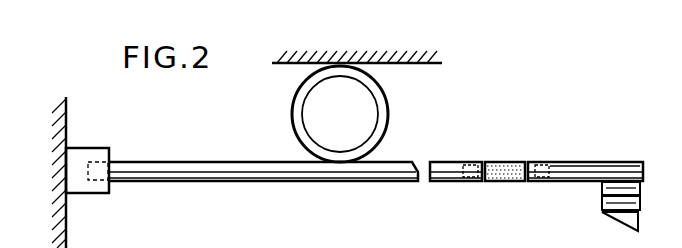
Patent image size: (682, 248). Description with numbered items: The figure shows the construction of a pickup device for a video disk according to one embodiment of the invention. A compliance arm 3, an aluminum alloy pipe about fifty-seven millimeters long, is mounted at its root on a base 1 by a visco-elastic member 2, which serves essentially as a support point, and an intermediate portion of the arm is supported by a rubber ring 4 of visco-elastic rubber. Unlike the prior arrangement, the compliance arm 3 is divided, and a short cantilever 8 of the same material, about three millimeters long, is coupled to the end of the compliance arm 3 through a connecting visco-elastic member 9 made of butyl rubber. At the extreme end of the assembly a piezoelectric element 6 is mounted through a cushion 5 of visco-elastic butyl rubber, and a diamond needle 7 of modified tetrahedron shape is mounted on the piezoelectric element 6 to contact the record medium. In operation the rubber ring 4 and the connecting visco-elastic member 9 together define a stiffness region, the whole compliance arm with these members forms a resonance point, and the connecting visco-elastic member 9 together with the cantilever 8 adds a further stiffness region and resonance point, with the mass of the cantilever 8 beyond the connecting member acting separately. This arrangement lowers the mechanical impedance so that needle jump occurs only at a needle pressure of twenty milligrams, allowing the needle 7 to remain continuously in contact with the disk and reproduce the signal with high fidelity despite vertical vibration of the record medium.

The base 1 is at (64, 180).
The visco-elastic member 2 is at (90, 152).
The compliance arm 3 is at (218, 182).
The rubber ring 4 is at (389, 118).
The cushion 5 is at (642, 190).
The piezoelectric element 6 is at (642, 203).
The needle 7 is at (640, 222).
The cantilever 8 is at (564, 183).
The connecting visco-elastic member 9 is at (498, 183).